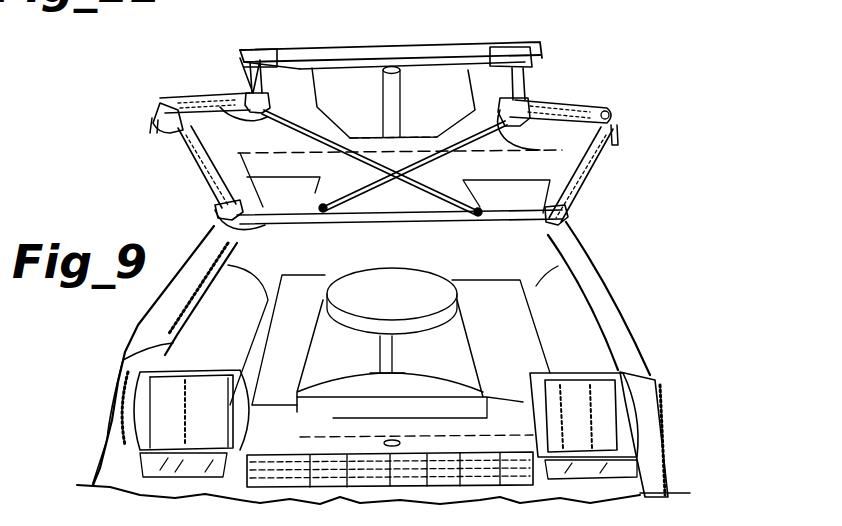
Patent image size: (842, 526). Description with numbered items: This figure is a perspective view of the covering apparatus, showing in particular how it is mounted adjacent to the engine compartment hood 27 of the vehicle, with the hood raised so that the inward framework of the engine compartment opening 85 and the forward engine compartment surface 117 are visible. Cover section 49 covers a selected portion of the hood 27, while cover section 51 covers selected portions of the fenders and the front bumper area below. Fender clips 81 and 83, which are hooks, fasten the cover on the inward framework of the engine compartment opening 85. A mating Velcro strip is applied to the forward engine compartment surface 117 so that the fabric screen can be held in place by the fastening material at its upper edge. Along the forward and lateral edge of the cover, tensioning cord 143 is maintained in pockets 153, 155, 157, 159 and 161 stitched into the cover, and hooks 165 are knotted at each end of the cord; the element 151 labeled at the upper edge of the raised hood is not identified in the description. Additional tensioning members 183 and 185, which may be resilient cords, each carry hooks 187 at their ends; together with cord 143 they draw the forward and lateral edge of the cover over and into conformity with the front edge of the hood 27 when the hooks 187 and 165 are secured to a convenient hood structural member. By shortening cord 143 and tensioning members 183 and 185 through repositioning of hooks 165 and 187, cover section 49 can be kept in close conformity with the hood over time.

The hood 27 is at (573, 133).
The cover section 49 is at (563, 100).
The cover section 51 is at (670, 457).
The fender clip 81 is at (618, 365).
The fender clip 83 is at (167, 363).
The engine compartment opening 85 is at (535, 252).
The forward engine compartment surface 117 is at (358, 440).
The tensioning cord 143 is at (273, 50).
The deck lid 151 is at (417, 43).
The pocket 153 is at (193, 98).
The pocket 155 is at (247, 80).
The pocket 157 is at (348, 62).
The pocket 159 is at (513, 50).
The pocket 161 is at (567, 107).
The hook 165 is at (230, 203).
The tensioning member 183 is at (290, 127).
The tensioning member 185 is at (432, 140).
The hook 187 is at (220, 107).